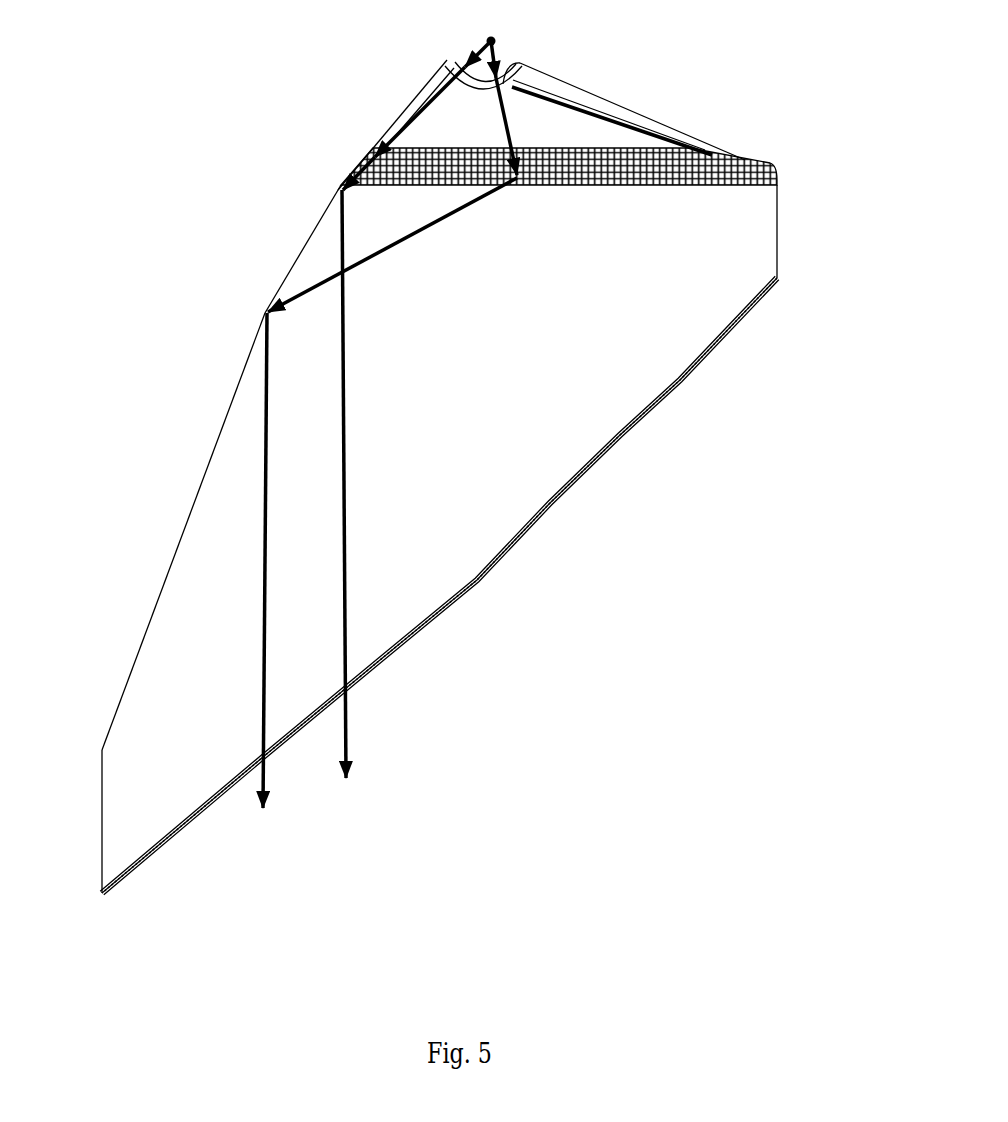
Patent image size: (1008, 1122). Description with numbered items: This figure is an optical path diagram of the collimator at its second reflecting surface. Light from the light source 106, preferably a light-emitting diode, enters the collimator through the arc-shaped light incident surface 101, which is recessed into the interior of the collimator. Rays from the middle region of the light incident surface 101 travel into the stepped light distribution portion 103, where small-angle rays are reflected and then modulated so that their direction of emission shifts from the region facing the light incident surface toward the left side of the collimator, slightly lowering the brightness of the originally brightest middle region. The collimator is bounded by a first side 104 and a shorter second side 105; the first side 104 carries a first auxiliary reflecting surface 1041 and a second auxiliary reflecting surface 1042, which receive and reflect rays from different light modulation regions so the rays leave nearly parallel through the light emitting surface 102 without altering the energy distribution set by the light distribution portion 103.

The light incident surface 101 is at (463, 77).
The light emitting surface 102 is at (550, 510).
The light distribution portion 103 is at (743, 160).
The first side 104 is at (392, 120).
The first auxiliary reflecting surface 1041 is at (297, 257).
The second auxiliary reflecting surface 1042 is at (190, 515).
The second side 105 is at (612, 100).
The light source 106 is at (495, 38).